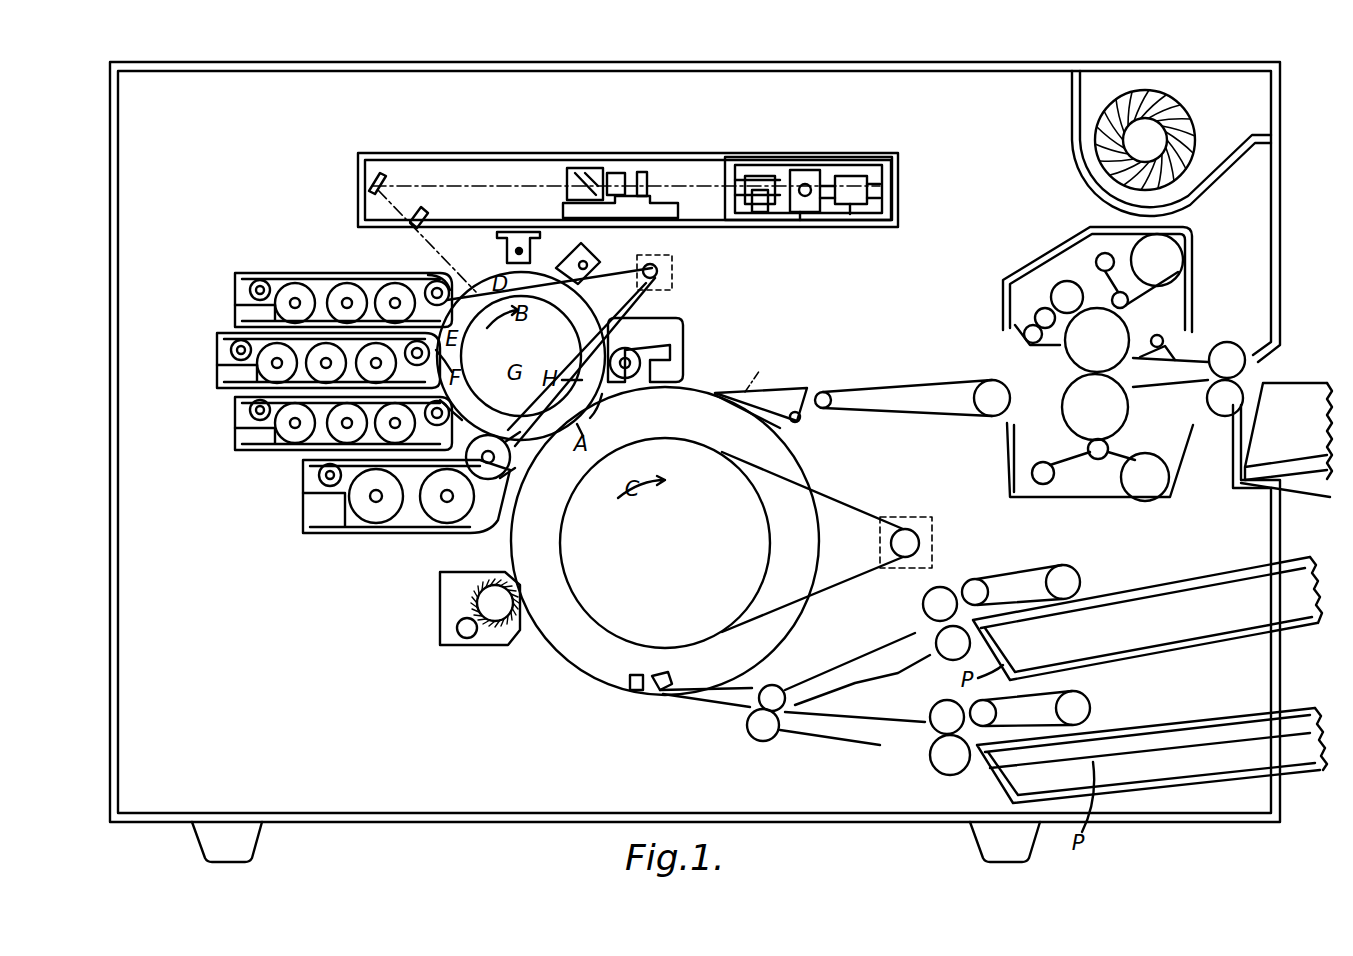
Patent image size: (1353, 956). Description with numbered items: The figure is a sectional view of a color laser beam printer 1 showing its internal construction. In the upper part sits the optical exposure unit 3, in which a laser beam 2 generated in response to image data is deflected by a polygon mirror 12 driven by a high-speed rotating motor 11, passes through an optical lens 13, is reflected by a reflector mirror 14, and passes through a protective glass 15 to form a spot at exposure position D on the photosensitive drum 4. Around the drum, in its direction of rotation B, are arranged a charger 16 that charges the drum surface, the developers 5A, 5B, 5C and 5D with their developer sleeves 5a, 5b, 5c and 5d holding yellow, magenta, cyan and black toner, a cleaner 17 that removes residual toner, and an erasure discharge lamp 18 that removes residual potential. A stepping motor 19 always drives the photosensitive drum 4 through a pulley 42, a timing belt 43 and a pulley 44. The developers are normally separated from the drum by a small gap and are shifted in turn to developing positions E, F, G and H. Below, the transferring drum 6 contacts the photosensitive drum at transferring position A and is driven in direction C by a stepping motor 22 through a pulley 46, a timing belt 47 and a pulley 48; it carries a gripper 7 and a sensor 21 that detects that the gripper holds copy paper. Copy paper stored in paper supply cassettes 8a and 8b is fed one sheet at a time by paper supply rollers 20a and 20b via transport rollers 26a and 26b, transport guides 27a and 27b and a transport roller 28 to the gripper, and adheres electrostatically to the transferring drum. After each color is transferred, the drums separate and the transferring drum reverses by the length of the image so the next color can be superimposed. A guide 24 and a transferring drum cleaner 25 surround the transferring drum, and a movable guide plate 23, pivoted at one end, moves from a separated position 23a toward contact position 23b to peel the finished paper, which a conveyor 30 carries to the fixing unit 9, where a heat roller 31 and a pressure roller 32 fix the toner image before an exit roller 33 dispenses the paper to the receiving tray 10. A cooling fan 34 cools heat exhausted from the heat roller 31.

The laser beam printer 1 is at (122, 176).
The laser beam 2 is at (540, 170).
The optical exposure unit 3 is at (585, 166).
The photosensitive drum 4 is at (585, 316).
The developer 5A is at (322, 275).
The developer 5B is at (217, 362).
The developer 5C is at (235, 420).
The developer 5D is at (303, 503).
The developer sleeve 5a is at (438, 278).
The developer sleeve 5b is at (452, 354).
The developer sleeve 5c is at (462, 402).
The developer sleeve 5d is at (505, 470).
The transferring drum 6 is at (605, 668).
The gripper 7 is at (667, 692).
The paper supply cassette 8a is at (1170, 595).
The paper supply cassette 8b is at (1228, 716).
The fixing unit 9 is at (1048, 268).
The receiving tray 10 is at (1292, 385).
The high-speed rotating motor 11 is at (855, 168).
The polygon mirror 12 is at (760, 168).
The optical lens 13 is at (625, 160).
The reflector mirror 14 is at (370, 184).
The protective glass 15 is at (410, 218).
The charger 16 is at (497, 248).
The cleaner 17 is at (683, 335).
The erasure discharge lamp 18 is at (585, 250).
The stepping motor 19 is at (675, 256).
The paper supply roller 20a is at (1065, 582).
The paper supply roller 20b is at (1078, 710).
The sensor 21 is at (636, 692).
The stepping motor 22 is at (915, 517).
The movable guide plate 23 is at (805, 420).
The separated position of movable guide plate 23a is at (754, 368).
The contact position of movable guide plate 23b is at (760, 425).
The guide 24 is at (728, 710).
The transferring drum cleaner 25 is at (440, 608).
The transport roller 26a is at (938, 643).
The transport roller 26b is at (948, 760).
The transport guide 27a is at (815, 690).
The transport guide 27b is at (878, 738).
The transport roller 28 is at (775, 695).
The conveyor 30 is at (910, 390).
The heat roller 31 is at (1072, 346).
The pressure roller 32 is at (1075, 420).
The exit roller 33 is at (1230, 370).
The cooling fan 34 is at (1085, 148).
The pulley 42 is at (662, 271).
The timing belt 43 is at (655, 302).
The pulley 44 is at (600, 396).
The pulley 46 is at (915, 546).
The timing belt 47 is at (880, 516).
The pulley 48 is at (745, 565).